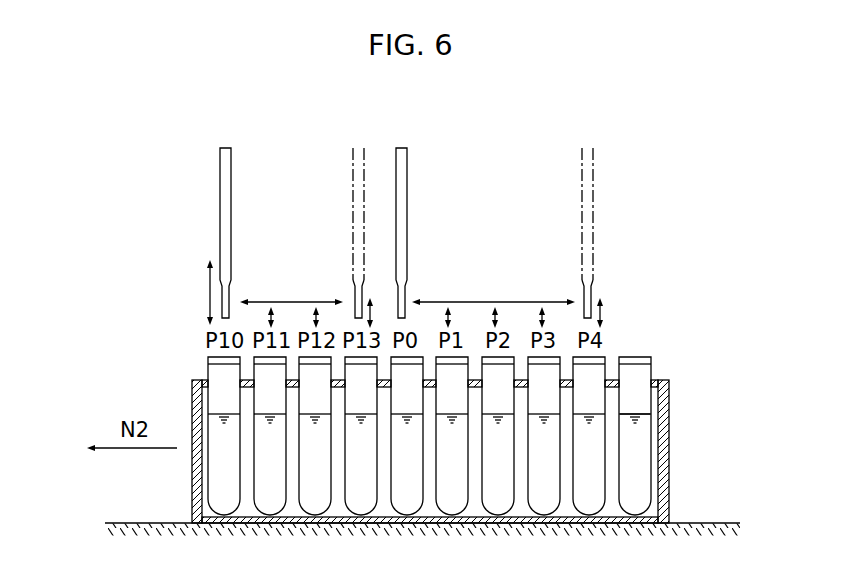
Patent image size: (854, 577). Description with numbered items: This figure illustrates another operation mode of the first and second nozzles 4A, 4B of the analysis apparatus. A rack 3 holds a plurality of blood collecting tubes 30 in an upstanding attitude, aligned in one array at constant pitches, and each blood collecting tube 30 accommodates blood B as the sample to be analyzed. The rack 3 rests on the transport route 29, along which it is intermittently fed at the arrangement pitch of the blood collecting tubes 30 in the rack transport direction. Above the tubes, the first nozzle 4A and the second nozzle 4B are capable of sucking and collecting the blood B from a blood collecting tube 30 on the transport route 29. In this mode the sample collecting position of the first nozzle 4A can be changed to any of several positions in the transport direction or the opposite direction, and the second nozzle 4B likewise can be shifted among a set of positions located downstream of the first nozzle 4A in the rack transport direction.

The first nozzle 4A is at (407, 178).
The second nozzle 4B is at (220, 180).
The blood collecting tube 30 is at (651, 362).
The rack 3 is at (673, 419).
The blood B is at (636, 494).
The transport route 29 is at (161, 521).